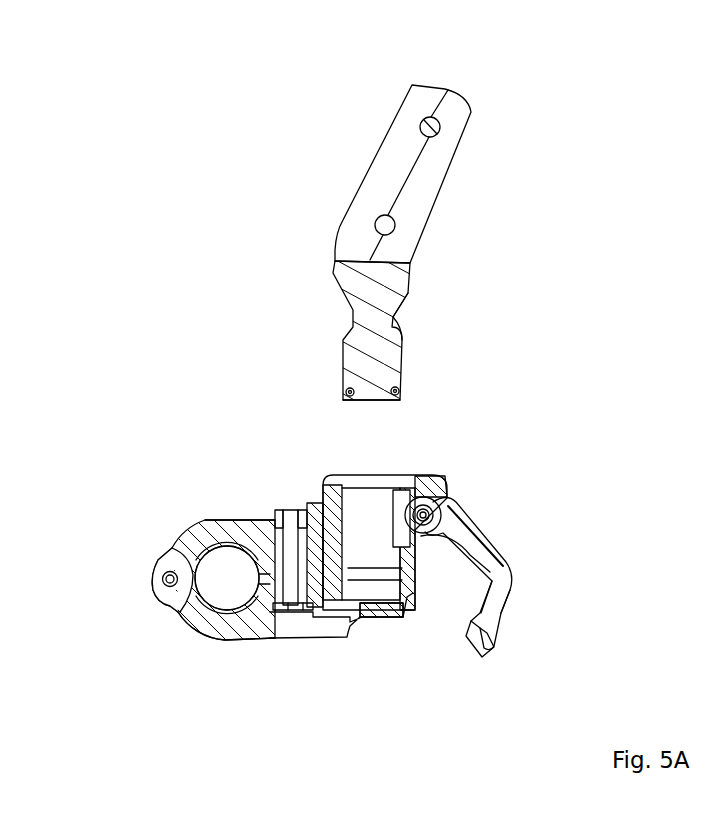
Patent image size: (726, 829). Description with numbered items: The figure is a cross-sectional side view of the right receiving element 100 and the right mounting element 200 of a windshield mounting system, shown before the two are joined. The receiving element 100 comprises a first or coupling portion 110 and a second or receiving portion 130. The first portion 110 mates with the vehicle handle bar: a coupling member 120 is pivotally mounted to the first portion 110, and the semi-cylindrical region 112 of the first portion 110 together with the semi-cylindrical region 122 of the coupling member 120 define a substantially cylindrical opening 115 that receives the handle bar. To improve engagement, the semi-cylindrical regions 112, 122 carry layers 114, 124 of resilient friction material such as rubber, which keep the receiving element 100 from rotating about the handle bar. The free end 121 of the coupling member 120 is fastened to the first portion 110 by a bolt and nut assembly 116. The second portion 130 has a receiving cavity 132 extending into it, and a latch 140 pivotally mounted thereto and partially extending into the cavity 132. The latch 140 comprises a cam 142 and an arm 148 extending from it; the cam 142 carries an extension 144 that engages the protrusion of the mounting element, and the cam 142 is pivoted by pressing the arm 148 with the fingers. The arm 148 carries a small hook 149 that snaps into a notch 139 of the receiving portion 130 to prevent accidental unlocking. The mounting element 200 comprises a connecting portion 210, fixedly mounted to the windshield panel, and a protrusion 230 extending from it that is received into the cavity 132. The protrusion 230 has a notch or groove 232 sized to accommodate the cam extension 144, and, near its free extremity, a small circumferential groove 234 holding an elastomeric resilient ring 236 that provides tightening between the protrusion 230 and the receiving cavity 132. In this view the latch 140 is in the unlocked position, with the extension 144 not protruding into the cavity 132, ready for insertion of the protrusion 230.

The receiving element 100 is at (530, 472).
The first or coupling portion 110 is at (313, 595).
The semi-cylindrical region 112 is at (203, 582).
The layer of resilient friction material 114 is at (205, 640).
The substantially cylindrical opening 115 is at (183, 588).
The bolt and nut assembly 116 is at (278, 605).
The coupling member 120 is at (205, 525).
The free end 121 is at (272, 517).
The semi-cylindrical region 122 is at (177, 531).
The layer of resilient friction material 124 is at (245, 523).
The second or receiving portion 130 is at (405, 585).
The receiving cavity 132 is at (389, 562).
The notch 139 is at (378, 600).
The latch 140 is at (520, 560).
The cam 142 is at (440, 512).
The extension 144 is at (440, 535).
The arm 148 is at (498, 605).
The hook 149 is at (462, 640).
The mounting element 200 is at (520, 227).
The connecting portion 210 is at (452, 148).
The protrusion 230 is at (410, 280).
The notch or groove 232 is at (402, 322).
The circumferential groove 234 is at (353, 401).
The resilient ring 236 is at (402, 390).